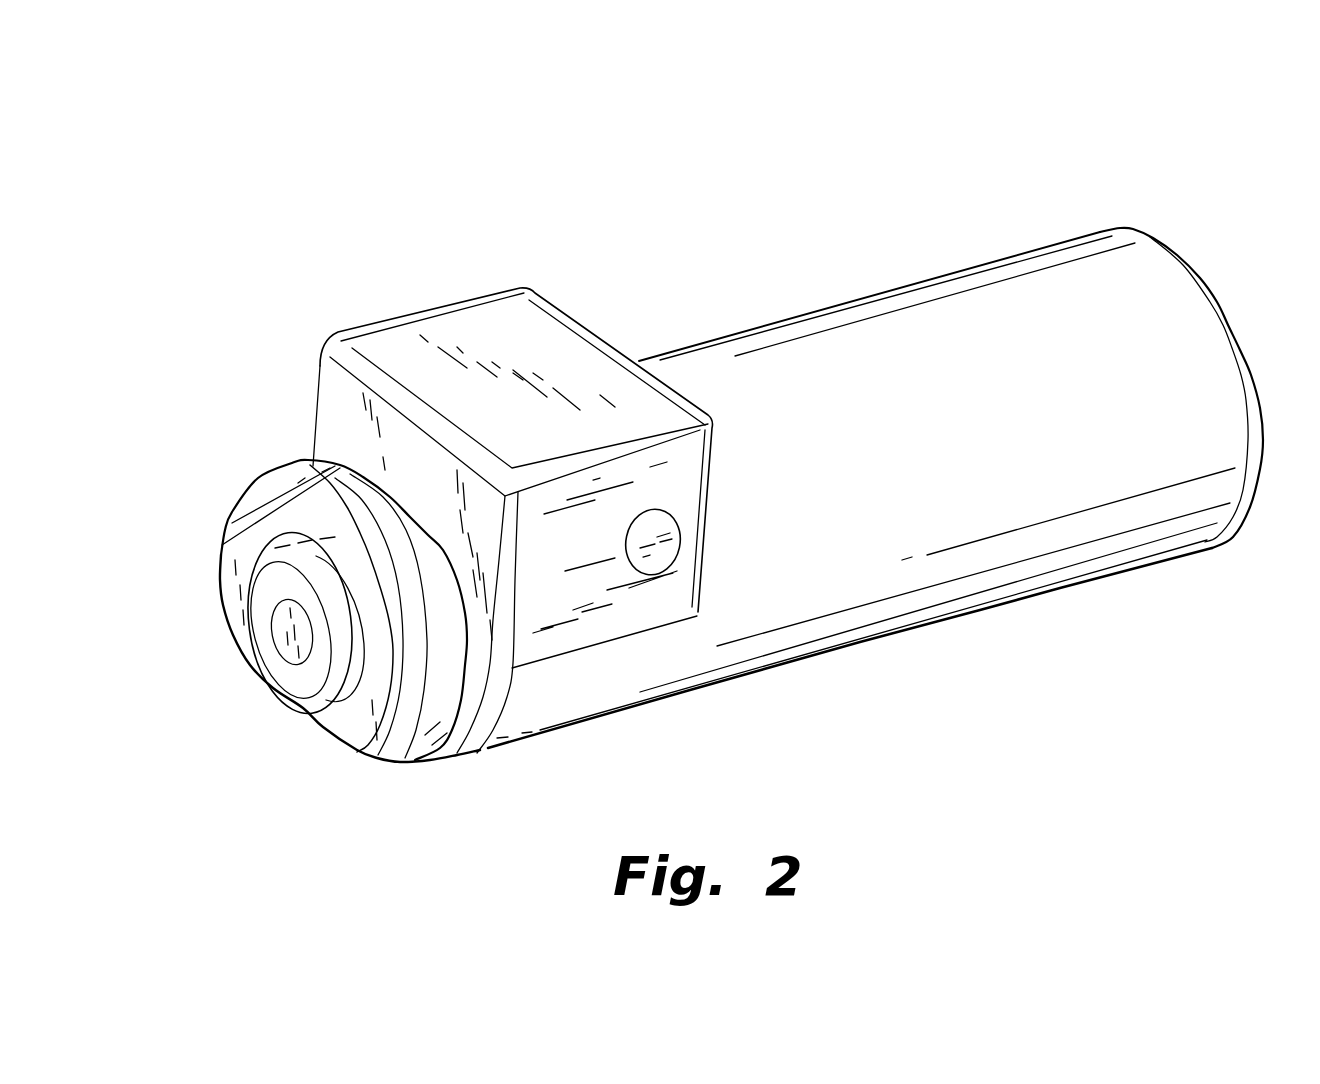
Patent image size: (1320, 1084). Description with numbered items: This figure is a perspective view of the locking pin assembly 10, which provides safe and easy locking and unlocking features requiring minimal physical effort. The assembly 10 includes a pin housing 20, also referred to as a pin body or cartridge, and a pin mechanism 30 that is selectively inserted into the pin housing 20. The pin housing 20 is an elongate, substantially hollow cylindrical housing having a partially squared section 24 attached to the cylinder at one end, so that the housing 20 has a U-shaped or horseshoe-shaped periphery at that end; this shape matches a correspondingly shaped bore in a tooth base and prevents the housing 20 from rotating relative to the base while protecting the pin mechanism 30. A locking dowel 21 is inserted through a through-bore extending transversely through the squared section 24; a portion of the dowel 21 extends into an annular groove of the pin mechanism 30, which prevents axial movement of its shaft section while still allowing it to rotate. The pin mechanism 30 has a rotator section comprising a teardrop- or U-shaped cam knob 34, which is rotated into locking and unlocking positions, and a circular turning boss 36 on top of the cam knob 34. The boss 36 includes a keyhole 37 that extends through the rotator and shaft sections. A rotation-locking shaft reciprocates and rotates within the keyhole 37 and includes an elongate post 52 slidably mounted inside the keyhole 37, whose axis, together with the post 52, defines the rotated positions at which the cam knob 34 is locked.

The locking pin assembly 10 is at (851, 170).
The pin housing 20 is at (1180, 181).
The locking dowel 21 is at (680, 545).
The partially squared section 24 is at (463, 317).
The pin mechanism 30 is at (292, 757).
The cam knob 34 is at (265, 488).
The turning boss 36 is at (263, 637).
The keyhole 37 is at (263, 677).
The post 52 is at (273, 617).